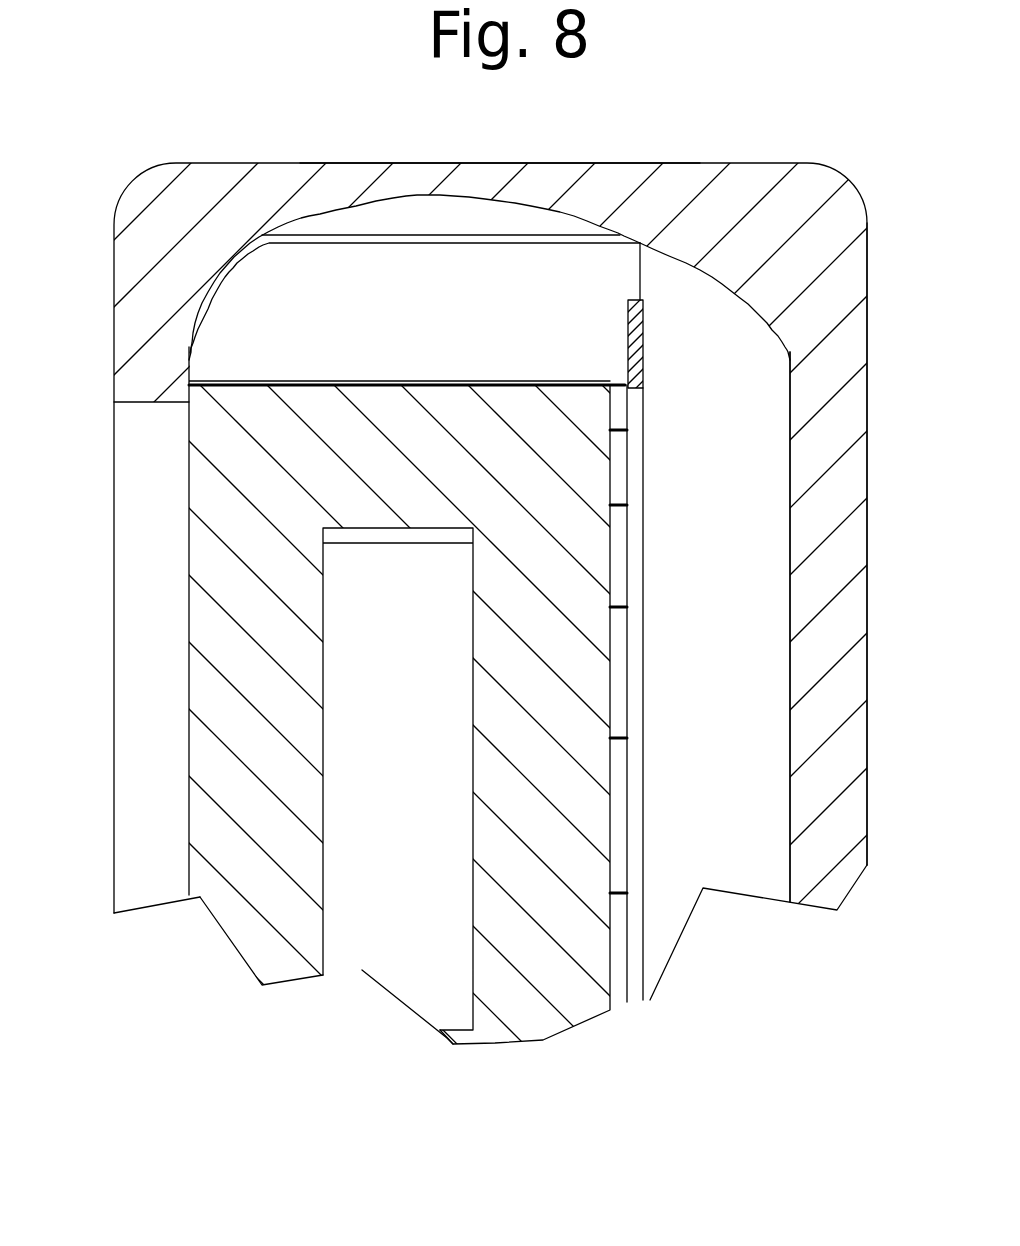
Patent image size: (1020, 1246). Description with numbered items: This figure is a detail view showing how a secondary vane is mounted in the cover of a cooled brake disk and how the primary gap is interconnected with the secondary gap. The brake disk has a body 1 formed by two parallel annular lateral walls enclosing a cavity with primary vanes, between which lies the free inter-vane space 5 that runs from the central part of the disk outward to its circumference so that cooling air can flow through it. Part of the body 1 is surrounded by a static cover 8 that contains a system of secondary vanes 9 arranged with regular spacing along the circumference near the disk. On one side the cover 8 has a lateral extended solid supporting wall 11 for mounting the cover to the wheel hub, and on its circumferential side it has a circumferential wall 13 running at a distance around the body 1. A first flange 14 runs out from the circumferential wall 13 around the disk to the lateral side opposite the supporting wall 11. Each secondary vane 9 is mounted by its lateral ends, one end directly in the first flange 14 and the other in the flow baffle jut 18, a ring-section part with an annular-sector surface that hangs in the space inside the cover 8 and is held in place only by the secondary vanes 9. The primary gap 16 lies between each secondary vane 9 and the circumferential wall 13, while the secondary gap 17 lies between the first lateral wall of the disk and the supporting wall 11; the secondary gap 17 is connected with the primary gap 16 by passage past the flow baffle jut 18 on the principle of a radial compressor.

The body 1 is at (188, 510).
The inter-vane space 5 is at (410, 978).
The static cover 8 is at (866, 680).
The secondary vanes 9 is at (472, 270).
The supporting wall 11 is at (852, 525).
The circumferential wall 13 is at (545, 184).
The first flange 14 is at (123, 340).
The primary gap 16 is at (390, 222).
The secondary gap 17 is at (757, 850).
The flow baffle jut 18 is at (632, 354).